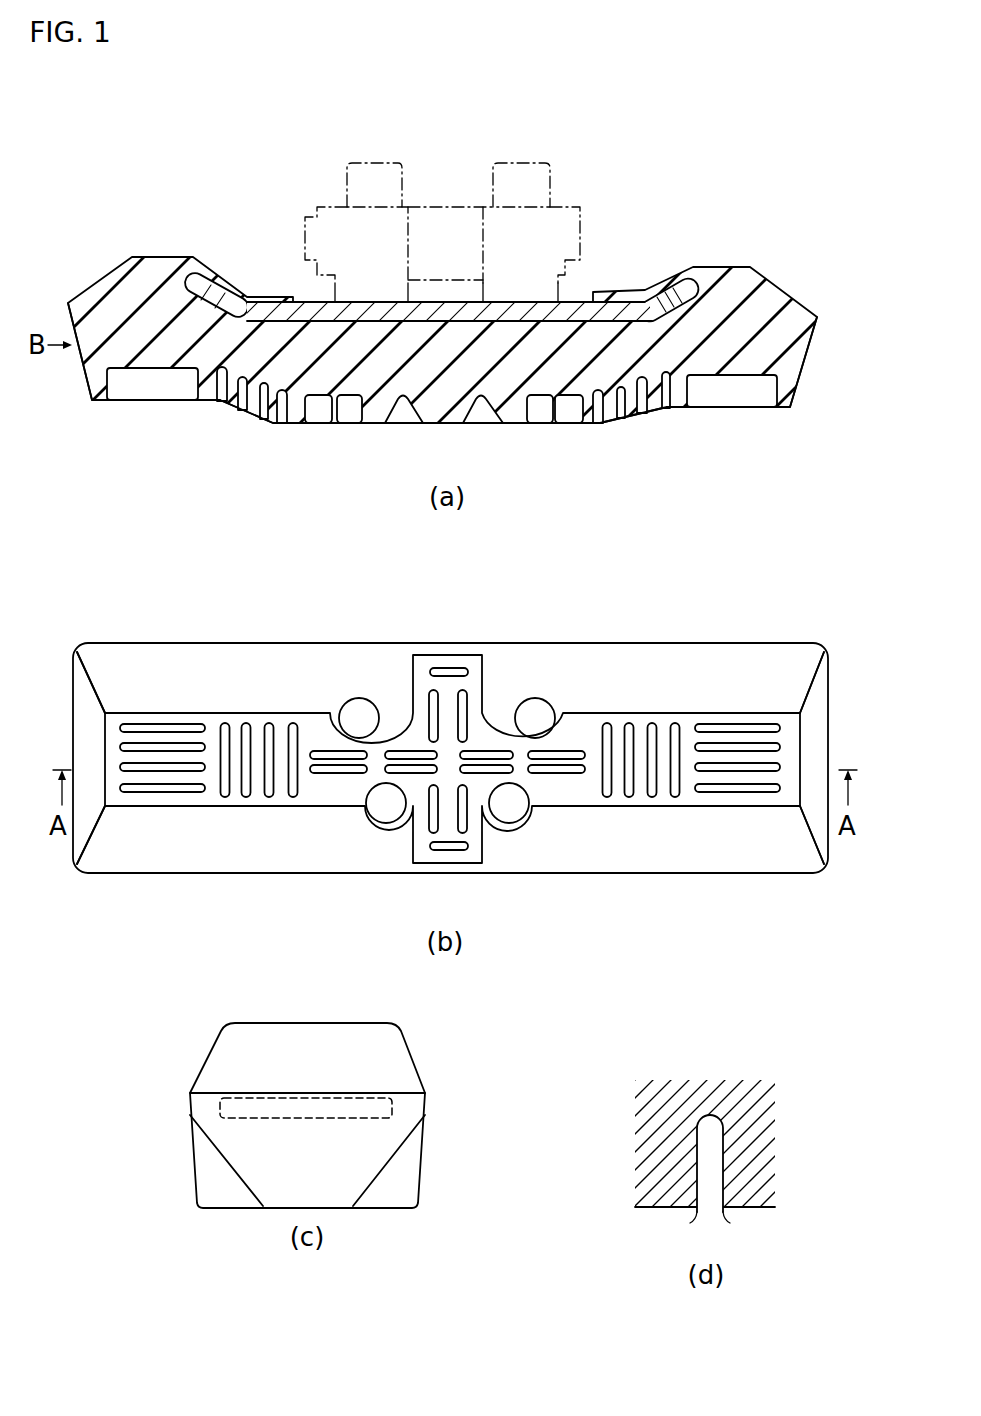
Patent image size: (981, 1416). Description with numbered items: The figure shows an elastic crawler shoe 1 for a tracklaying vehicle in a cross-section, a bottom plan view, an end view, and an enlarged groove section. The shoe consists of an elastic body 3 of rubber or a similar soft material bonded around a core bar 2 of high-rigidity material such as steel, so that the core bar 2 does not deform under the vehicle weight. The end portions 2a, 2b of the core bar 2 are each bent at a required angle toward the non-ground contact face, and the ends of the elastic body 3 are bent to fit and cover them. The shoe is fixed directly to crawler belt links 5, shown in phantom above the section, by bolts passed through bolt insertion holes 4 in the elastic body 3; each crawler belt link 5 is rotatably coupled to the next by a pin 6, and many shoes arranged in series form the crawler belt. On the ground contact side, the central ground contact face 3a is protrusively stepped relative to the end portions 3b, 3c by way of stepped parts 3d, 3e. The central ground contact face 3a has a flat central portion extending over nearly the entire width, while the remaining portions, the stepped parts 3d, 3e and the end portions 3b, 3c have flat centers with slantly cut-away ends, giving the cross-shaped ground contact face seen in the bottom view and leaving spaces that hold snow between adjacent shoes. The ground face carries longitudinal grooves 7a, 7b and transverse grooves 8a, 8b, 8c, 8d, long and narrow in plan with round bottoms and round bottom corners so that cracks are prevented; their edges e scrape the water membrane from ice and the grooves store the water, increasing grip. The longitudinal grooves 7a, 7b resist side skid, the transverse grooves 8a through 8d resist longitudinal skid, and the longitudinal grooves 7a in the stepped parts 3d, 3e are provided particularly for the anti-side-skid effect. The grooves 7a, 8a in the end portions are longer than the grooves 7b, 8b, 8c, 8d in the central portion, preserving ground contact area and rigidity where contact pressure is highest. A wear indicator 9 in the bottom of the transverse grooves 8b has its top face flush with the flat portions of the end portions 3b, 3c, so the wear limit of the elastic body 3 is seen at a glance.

The elastic crawler shoe 1 is at (684, 221).
The core bar 2 is at (575, 305).
The end portion of the core bar 2a is at (205, 283).
The end portion of the core bar 2b is at (686, 288).
The elastic body 3 is at (743, 290).
The central ground contact face 3a is at (447, 420).
The end portion of the elastic body 3b is at (100, 400).
The end portion of the elastic body 3c is at (787, 407).
The stepped part 3d is at (257, 420).
The stepped part 3e is at (632, 417).
The bolt insertion holes 4 is at (353, 705).
The crawler belt links 5 is at (343, 188).
The pin 6 is at (467, 205).
The longitudinal grooves 7a is at (222, 395).
The longitudinal grooves 7b is at (432, 825).
The transverse grooves 8a is at (110, 390).
The transverse grooves 8b is at (360, 420).
The transverse grooves 8c is at (397, 420).
The transverse groove 8d is at (445, 668).
The wear indicator 9 is at (330, 417).
The edges e is at (708, 1181).